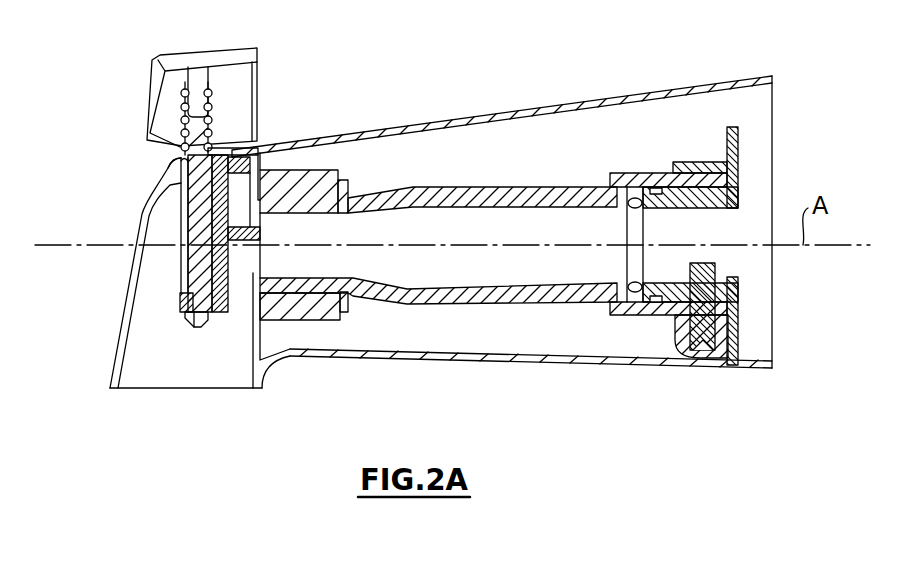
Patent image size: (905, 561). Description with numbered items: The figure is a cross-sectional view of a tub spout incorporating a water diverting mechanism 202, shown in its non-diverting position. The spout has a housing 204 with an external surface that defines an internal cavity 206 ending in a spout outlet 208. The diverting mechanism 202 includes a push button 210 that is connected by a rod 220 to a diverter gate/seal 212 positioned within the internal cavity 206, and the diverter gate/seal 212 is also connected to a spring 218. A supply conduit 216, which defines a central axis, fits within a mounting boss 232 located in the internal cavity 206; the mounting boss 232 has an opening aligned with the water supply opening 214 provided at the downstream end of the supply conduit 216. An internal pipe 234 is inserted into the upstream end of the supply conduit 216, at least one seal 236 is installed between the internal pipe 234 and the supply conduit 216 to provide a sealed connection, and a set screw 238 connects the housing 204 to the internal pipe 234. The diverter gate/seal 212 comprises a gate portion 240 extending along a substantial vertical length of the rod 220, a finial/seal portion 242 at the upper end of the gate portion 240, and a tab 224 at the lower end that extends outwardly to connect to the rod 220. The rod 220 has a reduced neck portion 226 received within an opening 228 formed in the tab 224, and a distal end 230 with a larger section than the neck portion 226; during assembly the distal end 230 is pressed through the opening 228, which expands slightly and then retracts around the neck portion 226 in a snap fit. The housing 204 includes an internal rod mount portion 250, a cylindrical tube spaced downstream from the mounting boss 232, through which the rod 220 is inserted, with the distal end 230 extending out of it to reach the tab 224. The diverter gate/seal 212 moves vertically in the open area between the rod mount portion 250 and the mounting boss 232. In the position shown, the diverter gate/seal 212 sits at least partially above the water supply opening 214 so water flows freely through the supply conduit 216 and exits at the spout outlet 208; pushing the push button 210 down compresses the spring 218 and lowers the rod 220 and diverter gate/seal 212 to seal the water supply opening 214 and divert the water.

The diverting mechanism 202 is at (149, 62).
The housing 204 is at (520, 109).
The internal cavity 206 is at (622, 148).
The spout outlet 208 is at (120, 390).
The push button 210 is at (220, 54).
The diverter gate/seal 212 is at (258, 195).
The water supply opening 214 is at (264, 270).
The supply conduit 216 is at (516, 296).
The spring 218 is at (208, 105).
The rod 220 is at (193, 212).
The tab 224 is at (180, 300).
The reduced neck portion 226 is at (180, 294).
The opening 228 is at (188, 323).
The distal end 230 is at (188, 325).
The mounting boss 232 is at (304, 310).
The internal pipe 234 is at (713, 200).
The seal 236 is at (632, 282).
The set screw 238 is at (700, 352).
The gate portion 240 is at (222, 195).
The finial/seal portion 242 is at (234, 194).
The rod mount portion 250 is at (180, 227).